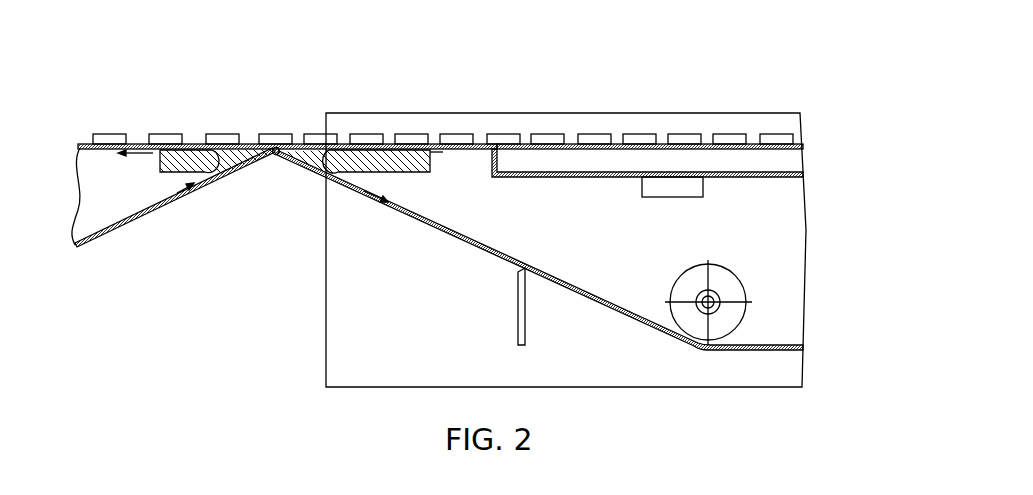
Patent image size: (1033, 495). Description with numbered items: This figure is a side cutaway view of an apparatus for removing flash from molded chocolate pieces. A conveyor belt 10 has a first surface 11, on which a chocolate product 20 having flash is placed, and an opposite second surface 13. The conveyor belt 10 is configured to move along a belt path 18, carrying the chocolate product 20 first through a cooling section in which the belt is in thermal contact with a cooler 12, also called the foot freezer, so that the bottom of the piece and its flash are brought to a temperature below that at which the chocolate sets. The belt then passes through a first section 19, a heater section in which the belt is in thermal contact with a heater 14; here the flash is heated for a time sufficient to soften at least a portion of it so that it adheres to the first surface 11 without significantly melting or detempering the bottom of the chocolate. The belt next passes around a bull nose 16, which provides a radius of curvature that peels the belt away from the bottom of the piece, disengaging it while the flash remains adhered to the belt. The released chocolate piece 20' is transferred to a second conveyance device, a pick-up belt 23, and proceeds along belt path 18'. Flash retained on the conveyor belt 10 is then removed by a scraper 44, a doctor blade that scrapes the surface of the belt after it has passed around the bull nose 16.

The conveyor belt 10 is at (803, 146).
The first surface 11 is at (800, 143).
The cooler 12 is at (565, 178).
The second surface 13 is at (803, 148).
The heater 14 is at (407, 172).
The bull nose 16 is at (273, 154).
The belt path 18 is at (539, 250).
The belt path 18' is at (173, 227).
The first section 19 is at (450, 75).
The chocolate product 20 is at (443, 86).
The released chocolate piece 20' is at (193, 83).
The pick-up belt 23 is at (137, 143).
The scraper 44 is at (518, 310).